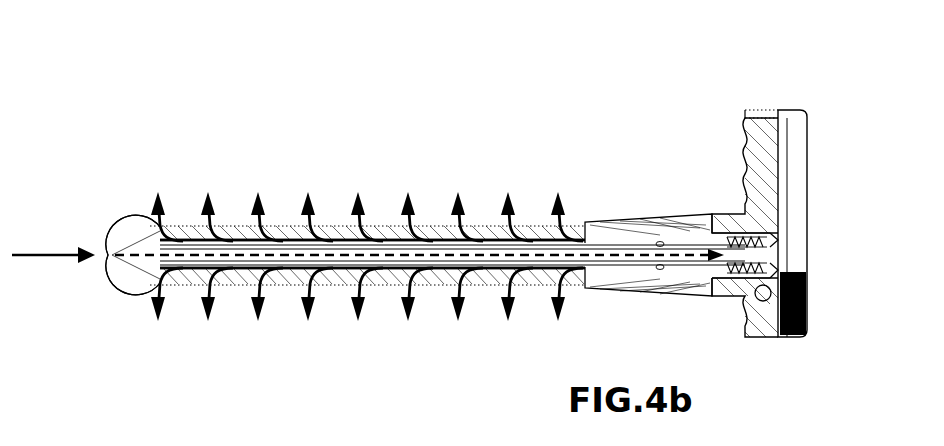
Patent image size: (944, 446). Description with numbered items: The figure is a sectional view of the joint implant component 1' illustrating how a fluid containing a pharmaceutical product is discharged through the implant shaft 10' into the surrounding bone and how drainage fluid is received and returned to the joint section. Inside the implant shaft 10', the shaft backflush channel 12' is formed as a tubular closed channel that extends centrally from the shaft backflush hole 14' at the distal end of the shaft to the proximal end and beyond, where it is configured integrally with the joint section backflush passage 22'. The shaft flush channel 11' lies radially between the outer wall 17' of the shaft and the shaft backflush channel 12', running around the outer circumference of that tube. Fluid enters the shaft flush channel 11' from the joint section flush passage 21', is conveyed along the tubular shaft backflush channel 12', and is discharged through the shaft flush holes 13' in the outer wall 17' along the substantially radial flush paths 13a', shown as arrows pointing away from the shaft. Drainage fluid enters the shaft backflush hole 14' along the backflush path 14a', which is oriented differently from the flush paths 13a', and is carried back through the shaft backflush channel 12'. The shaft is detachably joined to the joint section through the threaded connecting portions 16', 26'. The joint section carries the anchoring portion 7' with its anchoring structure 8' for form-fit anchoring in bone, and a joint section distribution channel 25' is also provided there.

The joint implant component 1' is at (390, 66).
The anchoring portion 7' is at (709, 201).
The anchoring structure 8' is at (752, 243).
The implant shaft 10' is at (345, 187).
The shaft flush channel 11' is at (677, 284).
The shaft backflush channel 12' is at (398, 244).
The shaft flush holes 13' is at (372, 335).
The flush paths 13a' is at (367, 191).
The shaft backflush hole 14' is at (86, 265).
The backflush path 14a' is at (53, 221).
The connecting portion 16' is at (687, 196).
The outer wall 17' is at (367, 333).
The joint section flush passage 21' is at (829, 274).
The joint section backflush passage 22' is at (829, 218).
The joint section distribution channel 25' is at (791, 329).
The connecting portion 26' is at (711, 209).